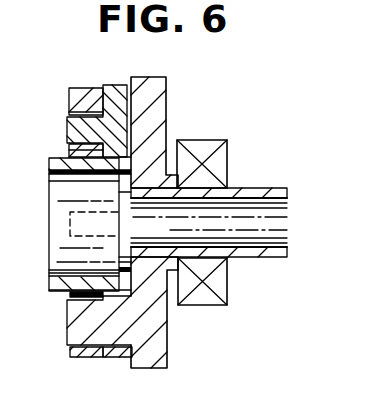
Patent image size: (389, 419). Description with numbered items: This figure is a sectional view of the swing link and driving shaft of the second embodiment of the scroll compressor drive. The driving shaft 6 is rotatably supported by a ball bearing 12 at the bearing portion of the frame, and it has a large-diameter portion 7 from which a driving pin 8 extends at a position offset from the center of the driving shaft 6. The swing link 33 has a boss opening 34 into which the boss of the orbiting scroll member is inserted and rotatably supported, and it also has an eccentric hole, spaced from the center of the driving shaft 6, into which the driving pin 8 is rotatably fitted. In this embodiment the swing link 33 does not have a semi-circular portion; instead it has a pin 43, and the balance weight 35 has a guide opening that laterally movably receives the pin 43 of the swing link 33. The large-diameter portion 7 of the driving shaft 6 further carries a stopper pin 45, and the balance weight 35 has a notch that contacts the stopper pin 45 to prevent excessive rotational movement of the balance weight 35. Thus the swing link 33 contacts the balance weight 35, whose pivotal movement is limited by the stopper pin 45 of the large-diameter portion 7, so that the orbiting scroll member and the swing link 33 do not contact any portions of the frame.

The driving shaft 6 is at (243, 195).
The large-diameter portion 7 is at (157, 92).
The driving pin 8 is at (75, 323).
The ball bearing 12 is at (199, 148).
The swing link 33 is at (115, 360).
The boss opening 34 is at (52, 178).
The balance weight 35 is at (80, 96).
The pin 43 is at (71, 133).
The stopper pin 45 is at (67, 225).